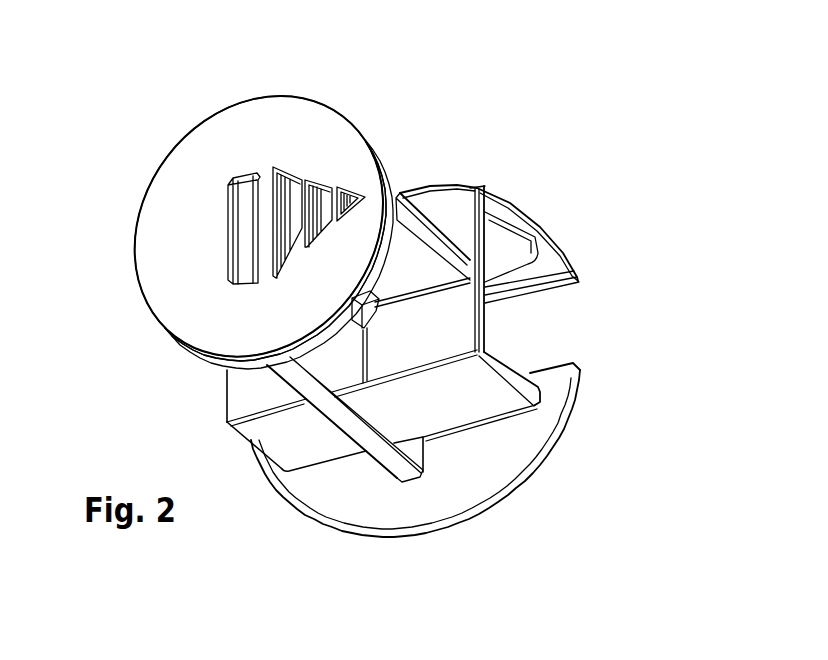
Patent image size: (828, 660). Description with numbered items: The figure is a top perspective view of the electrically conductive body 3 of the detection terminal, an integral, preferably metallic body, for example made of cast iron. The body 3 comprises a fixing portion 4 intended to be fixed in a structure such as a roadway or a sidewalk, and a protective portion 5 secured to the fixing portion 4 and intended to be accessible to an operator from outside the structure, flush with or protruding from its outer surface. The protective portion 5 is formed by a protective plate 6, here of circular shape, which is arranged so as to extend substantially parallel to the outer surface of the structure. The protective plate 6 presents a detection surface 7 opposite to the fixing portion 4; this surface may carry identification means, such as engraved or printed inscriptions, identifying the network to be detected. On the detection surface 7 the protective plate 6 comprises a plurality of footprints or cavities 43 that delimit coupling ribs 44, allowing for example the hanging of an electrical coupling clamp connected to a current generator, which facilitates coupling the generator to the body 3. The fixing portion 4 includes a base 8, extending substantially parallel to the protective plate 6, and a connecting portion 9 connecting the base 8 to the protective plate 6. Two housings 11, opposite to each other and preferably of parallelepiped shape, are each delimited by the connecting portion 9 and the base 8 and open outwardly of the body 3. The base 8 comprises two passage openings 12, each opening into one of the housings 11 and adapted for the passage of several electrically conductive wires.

The electrically conductive body 3 is at (446, 331).
The fixing portion 4 is at (285, 439).
The protective portion 5 is at (194, 364).
The protective plate 6 is at (237, 131).
The detection surface 7 is at (157, 219).
The base 8 is at (517, 430).
The connecting portion 9 is at (422, 228).
The housing 11 is at (539, 342).
The passage opening 12 is at (567, 285).
The footprints or cavities 43 is at (320, 188).
The coupling ribs 44 is at (268, 252).